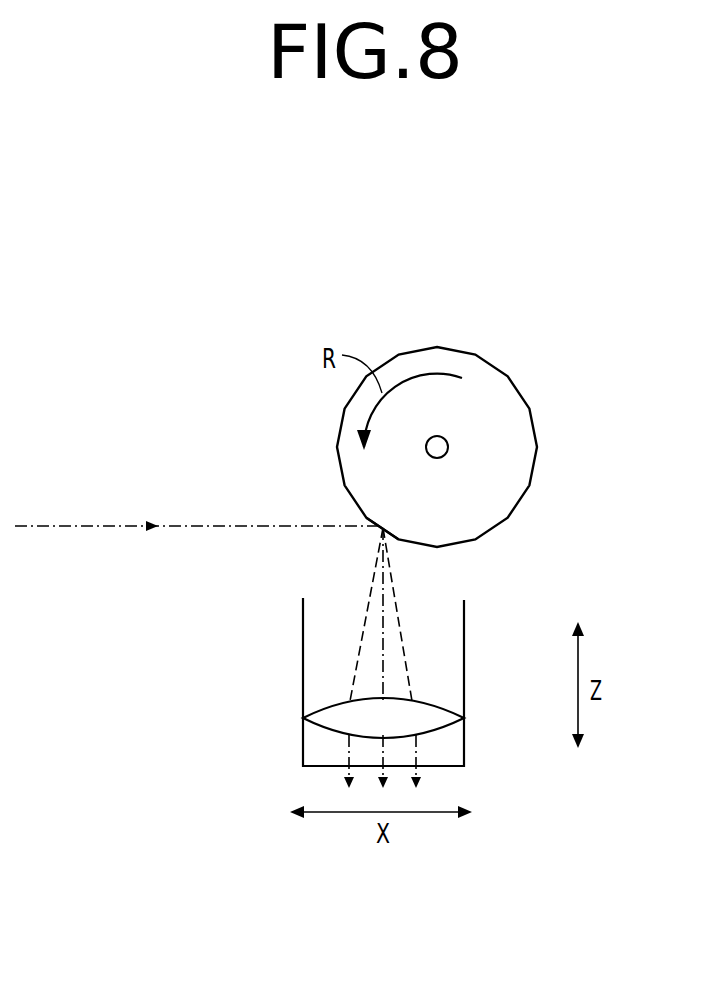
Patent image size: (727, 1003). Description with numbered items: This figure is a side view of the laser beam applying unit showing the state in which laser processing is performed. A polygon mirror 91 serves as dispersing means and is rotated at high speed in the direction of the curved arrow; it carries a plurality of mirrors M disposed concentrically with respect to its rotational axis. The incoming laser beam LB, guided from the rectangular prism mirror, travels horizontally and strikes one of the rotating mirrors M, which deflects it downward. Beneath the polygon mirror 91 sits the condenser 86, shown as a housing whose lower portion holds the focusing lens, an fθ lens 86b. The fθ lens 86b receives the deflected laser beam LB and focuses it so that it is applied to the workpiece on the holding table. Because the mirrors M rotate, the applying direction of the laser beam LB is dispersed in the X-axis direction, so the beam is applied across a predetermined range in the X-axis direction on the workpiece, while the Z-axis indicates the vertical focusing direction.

The polygon mirror 91 is at (513, 415).
The condenser 86 is at (464, 655).
The focusing lens (fθ lens) 86b is at (464, 718).
The laser beam LB is at (82, 527).
The mirrors M is at (373, 523).